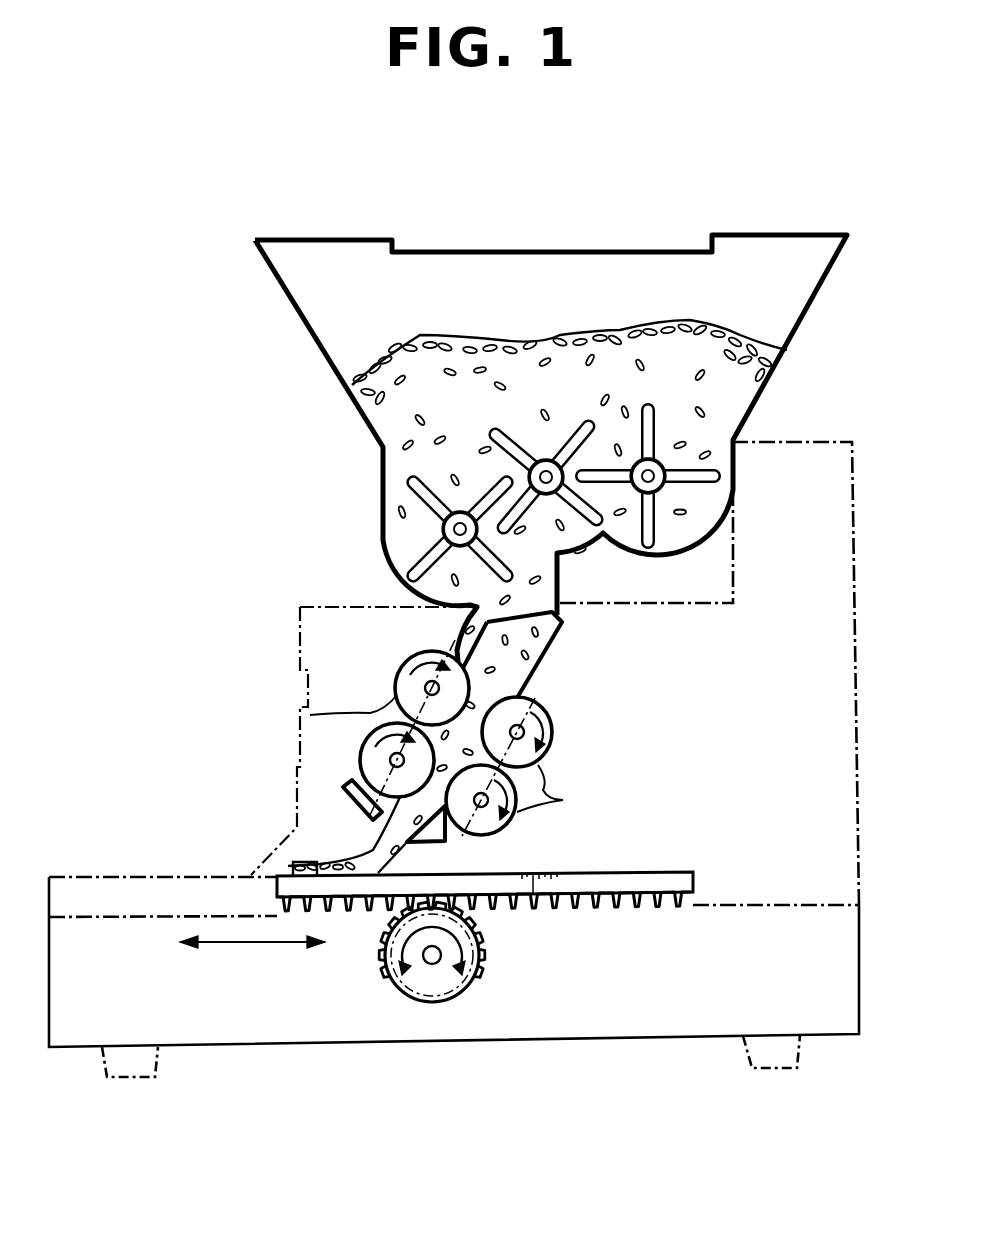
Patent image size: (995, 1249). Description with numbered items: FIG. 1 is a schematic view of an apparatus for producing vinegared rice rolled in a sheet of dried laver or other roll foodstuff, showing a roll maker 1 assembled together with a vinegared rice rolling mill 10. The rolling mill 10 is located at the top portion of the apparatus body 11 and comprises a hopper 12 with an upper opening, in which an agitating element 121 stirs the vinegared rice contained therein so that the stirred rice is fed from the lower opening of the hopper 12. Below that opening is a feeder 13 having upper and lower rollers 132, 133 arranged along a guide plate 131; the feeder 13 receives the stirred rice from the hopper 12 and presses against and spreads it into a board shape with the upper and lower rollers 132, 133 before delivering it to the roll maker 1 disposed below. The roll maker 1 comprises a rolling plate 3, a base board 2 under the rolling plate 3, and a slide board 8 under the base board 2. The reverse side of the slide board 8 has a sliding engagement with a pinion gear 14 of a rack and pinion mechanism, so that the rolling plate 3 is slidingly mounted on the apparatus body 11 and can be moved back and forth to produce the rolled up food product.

The roll maker 1 is at (668, 857).
The base board 2 is at (693, 872).
The rolling plate 3 is at (700, 882).
The slide board 8 is at (694, 896).
The vinegared rice rolling mill 10 is at (752, 214).
The apparatus body 11 is at (855, 593).
The hopper 12 is at (712, 233).
The agitating element 121 is at (512, 430).
The feeder 13 is at (360, 682).
The guide plate 131 is at (548, 645).
The upper rollers 132 is at (357, 737).
The lower rollers 133 is at (563, 800).
The pinion gear 14 is at (477, 983).